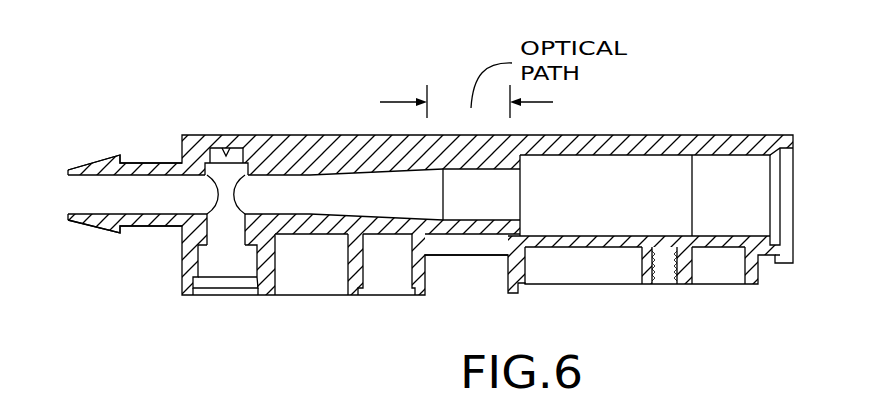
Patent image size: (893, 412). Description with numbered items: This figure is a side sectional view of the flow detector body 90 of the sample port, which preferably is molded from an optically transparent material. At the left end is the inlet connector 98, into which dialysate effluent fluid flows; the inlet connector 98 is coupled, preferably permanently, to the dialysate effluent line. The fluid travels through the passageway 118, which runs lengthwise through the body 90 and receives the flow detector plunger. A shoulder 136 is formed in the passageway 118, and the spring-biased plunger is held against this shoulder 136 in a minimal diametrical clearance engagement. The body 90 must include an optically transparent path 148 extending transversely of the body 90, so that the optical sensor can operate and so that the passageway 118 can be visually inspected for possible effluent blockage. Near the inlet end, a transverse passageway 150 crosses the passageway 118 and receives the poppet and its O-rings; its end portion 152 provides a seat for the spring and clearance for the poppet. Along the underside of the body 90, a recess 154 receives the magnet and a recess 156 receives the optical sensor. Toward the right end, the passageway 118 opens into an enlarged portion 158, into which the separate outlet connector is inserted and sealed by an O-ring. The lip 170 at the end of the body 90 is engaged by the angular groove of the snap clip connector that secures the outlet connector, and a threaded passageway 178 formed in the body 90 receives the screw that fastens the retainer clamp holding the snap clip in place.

The body 90 is at (729, 131).
The inlet connector 98 is at (105, 234).
The passageway 118 is at (153, 205).
The shoulder 136 is at (522, 233).
The optical path 148 is at (536, 131).
The transverse passageway 150 is at (253, 276).
The end portion 152 is at (228, 154).
The recess 154 is at (365, 276).
The recess 156 is at (463, 238).
The enlarged portion 158 is at (758, 213).
The lip 170 is at (788, 264).
The threaded passageway 178 is at (669, 285).